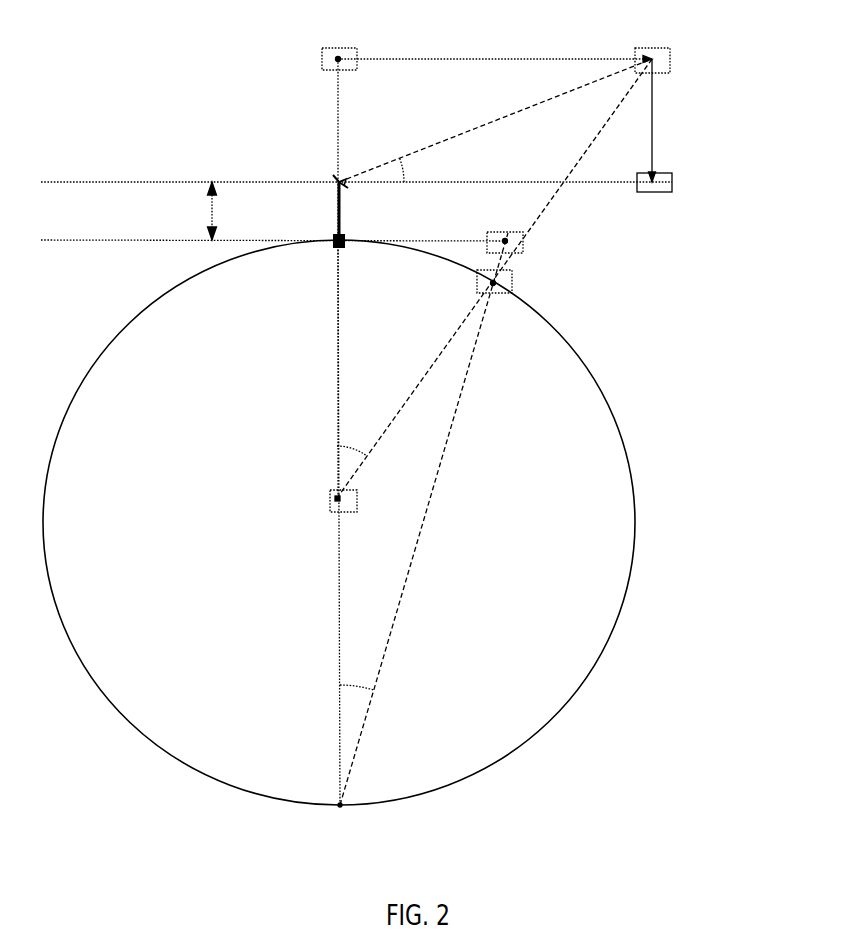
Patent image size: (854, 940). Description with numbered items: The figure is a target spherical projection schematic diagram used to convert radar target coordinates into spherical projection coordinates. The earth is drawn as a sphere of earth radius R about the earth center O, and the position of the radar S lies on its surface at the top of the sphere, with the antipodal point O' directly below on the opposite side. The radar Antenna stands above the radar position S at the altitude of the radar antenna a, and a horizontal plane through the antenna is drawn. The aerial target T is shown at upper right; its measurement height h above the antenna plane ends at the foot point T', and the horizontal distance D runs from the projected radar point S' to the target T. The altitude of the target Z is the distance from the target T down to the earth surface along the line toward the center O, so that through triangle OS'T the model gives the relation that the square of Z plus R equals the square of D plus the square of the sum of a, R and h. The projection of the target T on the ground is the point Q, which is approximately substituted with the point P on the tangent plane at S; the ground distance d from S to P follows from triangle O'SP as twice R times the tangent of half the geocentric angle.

The projected radar point S' is at (327, 131).
The horizontal distance D is at (495, 44).
The aerial target T is at (667, 44).
The measurement height of the radar h is at (672, 120).
The target projection point T' is at (668, 180).
The altitude of the target Z is at (494, 278).
The radar antenna Antenna is at (288, 191).
The altitude of the radar antenna a is at (228, 211).
The position of the radar S is at (319, 223).
The ground distance d is at (273, 225).
The approximate ground point P is at (510, 230).
The ground projection of the target Q is at (508, 283).
The earth radius R is at (318, 369).
The earth center O is at (326, 503).
The antipodal point O' is at (316, 827).